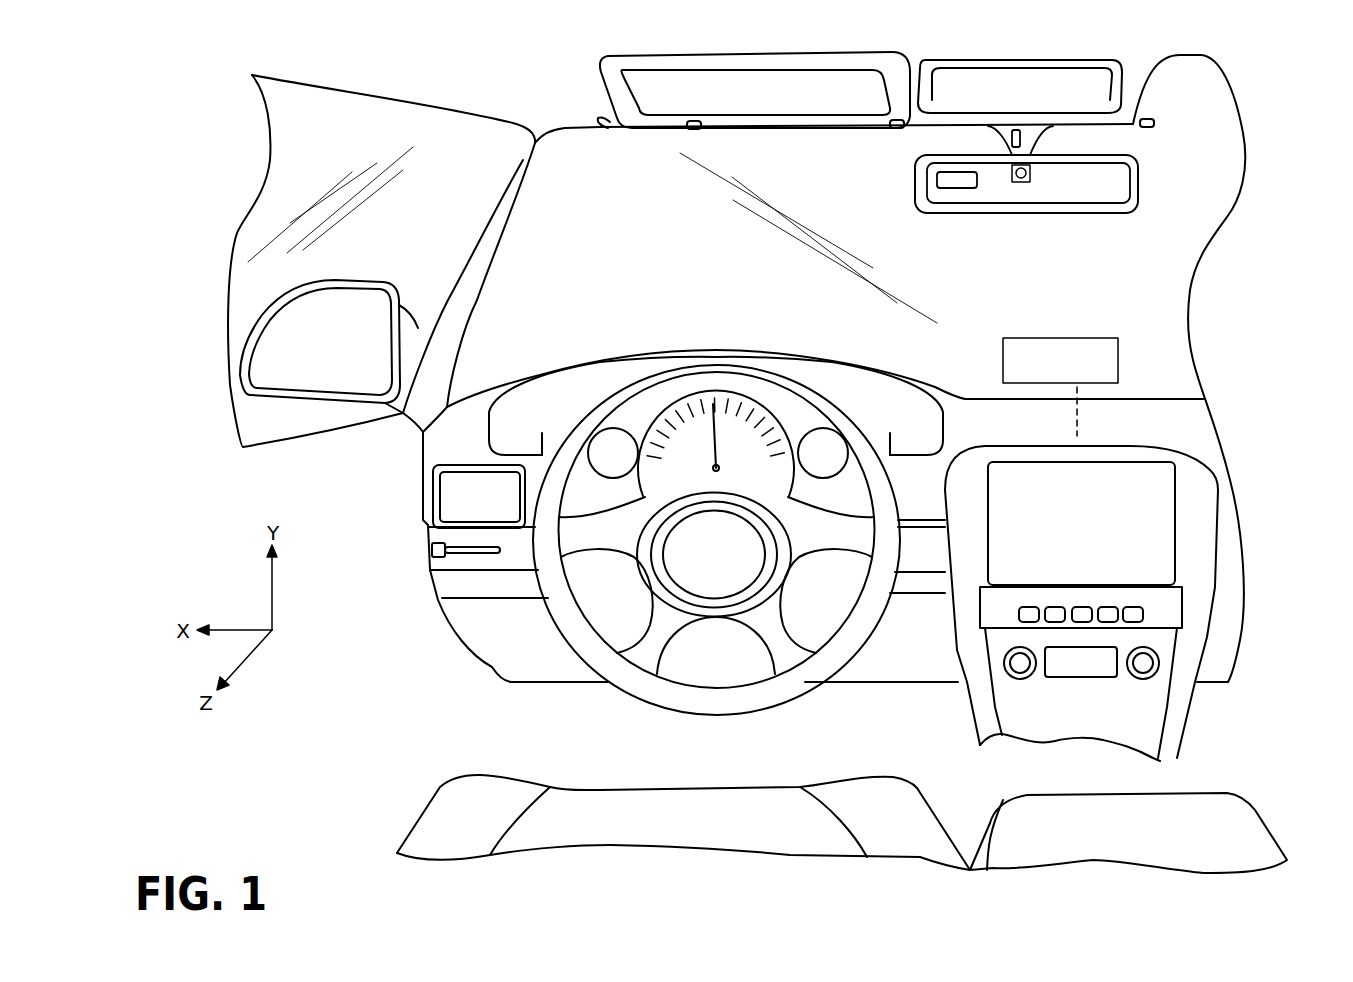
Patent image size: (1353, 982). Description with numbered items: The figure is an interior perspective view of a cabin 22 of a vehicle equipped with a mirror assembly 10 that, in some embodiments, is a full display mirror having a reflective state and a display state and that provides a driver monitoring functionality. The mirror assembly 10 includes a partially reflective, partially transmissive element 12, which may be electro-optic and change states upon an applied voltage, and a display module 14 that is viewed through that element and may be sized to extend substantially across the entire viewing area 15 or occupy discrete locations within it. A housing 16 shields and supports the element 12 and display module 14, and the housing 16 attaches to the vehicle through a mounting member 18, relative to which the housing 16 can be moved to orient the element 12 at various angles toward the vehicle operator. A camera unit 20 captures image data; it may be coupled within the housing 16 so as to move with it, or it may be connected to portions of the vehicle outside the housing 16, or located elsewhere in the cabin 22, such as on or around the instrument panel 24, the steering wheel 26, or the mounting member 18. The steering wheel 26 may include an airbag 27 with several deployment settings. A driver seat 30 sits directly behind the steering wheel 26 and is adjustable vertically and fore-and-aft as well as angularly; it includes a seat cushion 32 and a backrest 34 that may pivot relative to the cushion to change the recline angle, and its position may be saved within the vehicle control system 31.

The mirror assembly 10 is at (1082, 143).
The partially reflective, partially transmissive element 12 is at (1100, 175).
The display module 14 is at (956, 172).
The viewing area 15 is at (1013, 184).
The housing 16 is at (915, 175).
The mounting member 18 is at (1016, 128).
The camera unit 20 is at (1030, 174).
The cabin 22 is at (1242, 282).
The instrument panel 24 is at (538, 463).
The steering wheel 26 is at (720, 375).
The airbag 27 is at (705, 535).
The driver seat 30 is at (799, 851).
The vehicle control system 31 is at (1052, 374).
The seat cushion 32 is at (777, 822).
The backrest 34 is at (1168, 838).